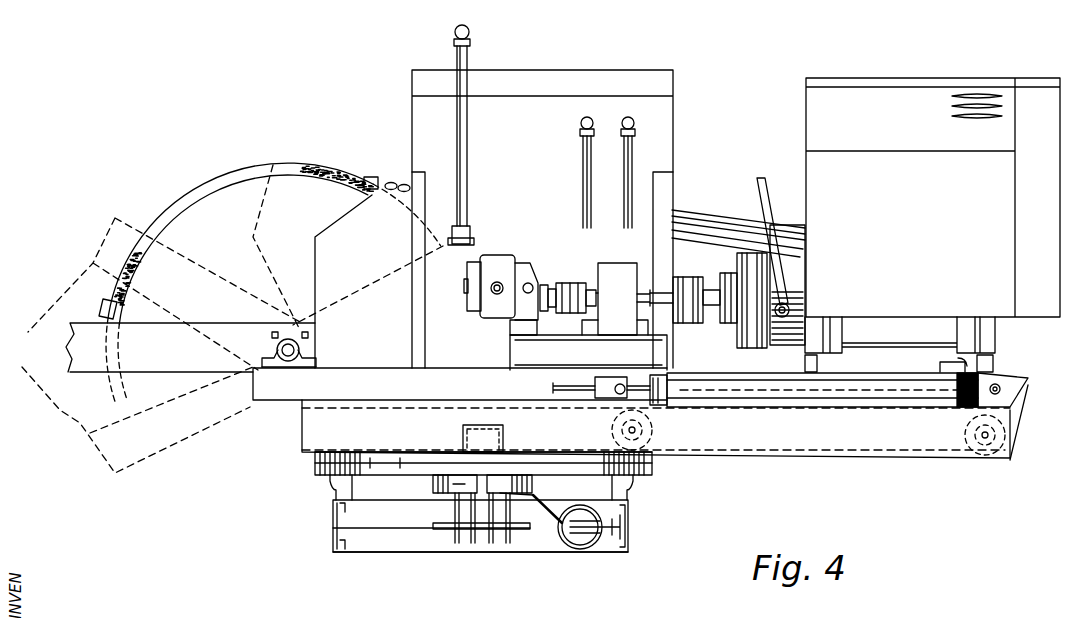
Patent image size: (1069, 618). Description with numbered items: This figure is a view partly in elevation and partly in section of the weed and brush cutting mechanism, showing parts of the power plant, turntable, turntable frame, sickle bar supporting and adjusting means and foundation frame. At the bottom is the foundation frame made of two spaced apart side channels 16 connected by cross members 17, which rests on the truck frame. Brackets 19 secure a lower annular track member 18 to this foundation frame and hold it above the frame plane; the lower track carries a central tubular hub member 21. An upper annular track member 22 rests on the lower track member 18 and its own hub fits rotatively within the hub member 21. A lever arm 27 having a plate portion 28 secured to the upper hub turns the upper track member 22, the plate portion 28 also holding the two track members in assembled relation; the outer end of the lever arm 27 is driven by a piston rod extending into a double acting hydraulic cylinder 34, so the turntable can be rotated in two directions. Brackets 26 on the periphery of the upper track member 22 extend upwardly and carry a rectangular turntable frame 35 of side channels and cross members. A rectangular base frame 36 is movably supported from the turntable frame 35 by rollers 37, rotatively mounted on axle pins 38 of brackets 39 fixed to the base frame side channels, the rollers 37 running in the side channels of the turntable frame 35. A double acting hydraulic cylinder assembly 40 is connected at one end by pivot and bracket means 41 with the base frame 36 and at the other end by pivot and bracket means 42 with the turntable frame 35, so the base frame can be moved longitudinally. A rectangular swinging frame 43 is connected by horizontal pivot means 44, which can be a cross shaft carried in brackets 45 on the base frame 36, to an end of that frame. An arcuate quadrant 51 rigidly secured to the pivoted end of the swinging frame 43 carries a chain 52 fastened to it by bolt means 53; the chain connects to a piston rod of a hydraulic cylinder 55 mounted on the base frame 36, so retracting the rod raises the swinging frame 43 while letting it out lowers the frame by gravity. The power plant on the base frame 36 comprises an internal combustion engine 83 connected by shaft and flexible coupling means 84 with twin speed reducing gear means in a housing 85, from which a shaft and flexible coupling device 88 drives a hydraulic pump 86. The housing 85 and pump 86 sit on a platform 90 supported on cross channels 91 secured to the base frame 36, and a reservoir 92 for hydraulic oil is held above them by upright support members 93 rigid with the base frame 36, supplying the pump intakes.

The side channels 16 is at (333, 522).
The cross members 17 is at (370, 542).
The lower annular track member 18 is at (318, 472).
The brackets 19 is at (340, 490).
The tubular hub member 21 is at (438, 487).
The upper annular track member 22 is at (315, 462).
The brackets 26 is at (463, 430).
The lever arm 27 is at (547, 525).
The plate portion 28 is at (440, 500).
The hydraulic cylinder 34 is at (580, 548).
The turntable frame 35 is at (872, 447).
The base frame 36 is at (445, 378).
The rollers 37 is at (650, 440).
The axle pins 38 is at (648, 426).
The brackets 39 is at (615, 428).
The hydraulic cylinder assembly 40 is at (882, 382).
The pivot and bracket means 41 is at (603, 389).
The pivot and bracket means 42 is at (1013, 380).
The swinging frame 43 is at (70, 345).
The horizontal pivot means 44 is at (300, 348).
The brackets 45 is at (303, 362).
The arcuate quadrant 51 is at (226, 197).
The chain 52 is at (378, 178).
The bolt means 53 is at (105, 305).
The hydraulic cylinder 55 is at (705, 222).
The internal combustion engine 83 is at (908, 199).
The shaft and flexible coupling means 84 is at (716, 288).
The housing 85 is at (617, 266).
The hydraulic pump 86 is at (488, 279).
The shaft and flexible coupling device 88 is at (553, 283).
The platform 90 is at (568, 338).
The cross channels 91 is at (646, 354).
The reservoir 92 is at (552, 106).
The upright support members 93 is at (412, 300).